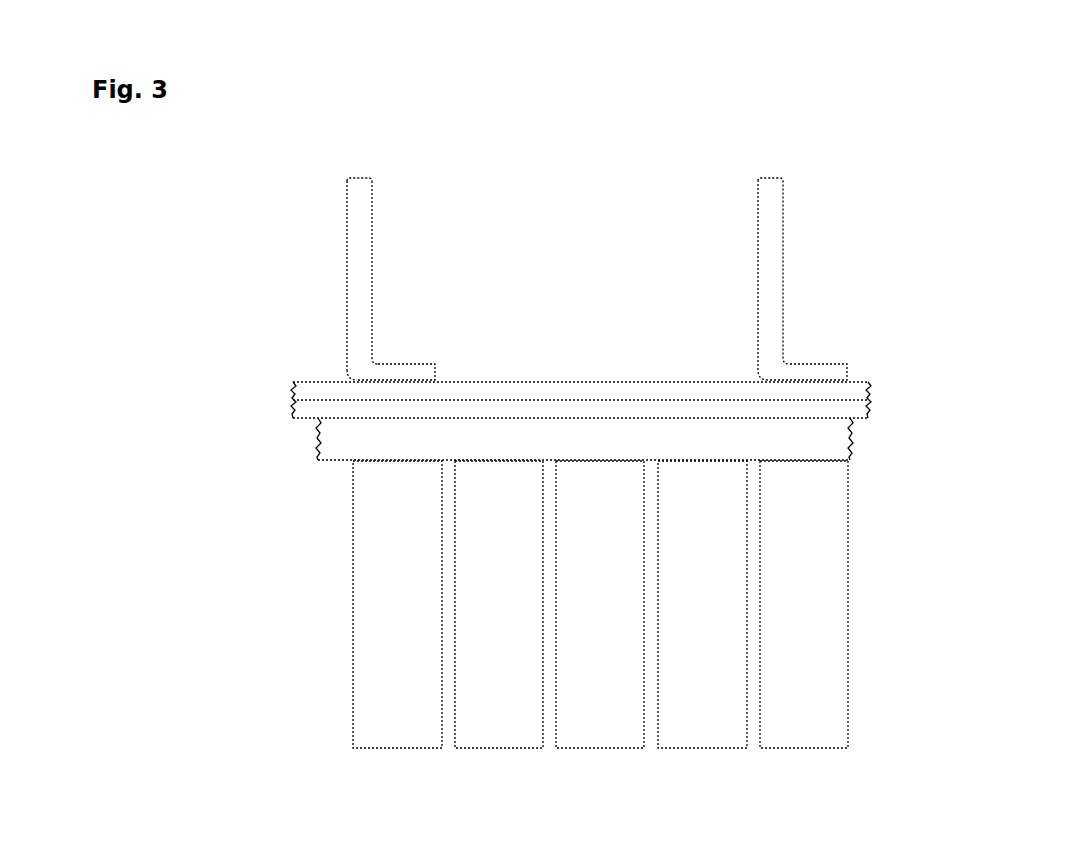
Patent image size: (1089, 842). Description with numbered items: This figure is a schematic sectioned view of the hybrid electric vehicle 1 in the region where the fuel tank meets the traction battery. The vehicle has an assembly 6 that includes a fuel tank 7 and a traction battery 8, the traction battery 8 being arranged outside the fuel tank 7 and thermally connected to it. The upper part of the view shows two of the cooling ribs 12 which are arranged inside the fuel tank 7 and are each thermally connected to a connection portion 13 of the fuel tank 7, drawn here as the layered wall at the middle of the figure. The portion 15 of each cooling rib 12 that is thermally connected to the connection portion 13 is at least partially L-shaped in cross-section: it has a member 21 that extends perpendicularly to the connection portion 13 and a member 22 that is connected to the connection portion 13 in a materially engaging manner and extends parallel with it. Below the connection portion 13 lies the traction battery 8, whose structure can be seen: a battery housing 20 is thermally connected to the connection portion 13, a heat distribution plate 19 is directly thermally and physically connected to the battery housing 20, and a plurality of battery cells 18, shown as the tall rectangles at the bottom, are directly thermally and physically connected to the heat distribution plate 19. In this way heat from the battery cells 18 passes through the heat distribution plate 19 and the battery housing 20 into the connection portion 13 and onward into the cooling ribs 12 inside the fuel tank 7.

The hybrid electric vehicle 1 is at (1000, 239).
The assembly 6 is at (893, 410).
The fuel tank 7 is at (624, 378).
The traction battery 8 is at (350, 541).
The cooling rib 12 is at (342, 263).
The connection portion 13 is at (570, 390).
The portion 15 is at (348, 220).
The battery cell 18 is at (808, 660).
The heat distribution plate 19 is at (352, 441).
The battery housing 20 is at (316, 410).
The member 21 is at (362, 238).
The member 22 is at (407, 375).